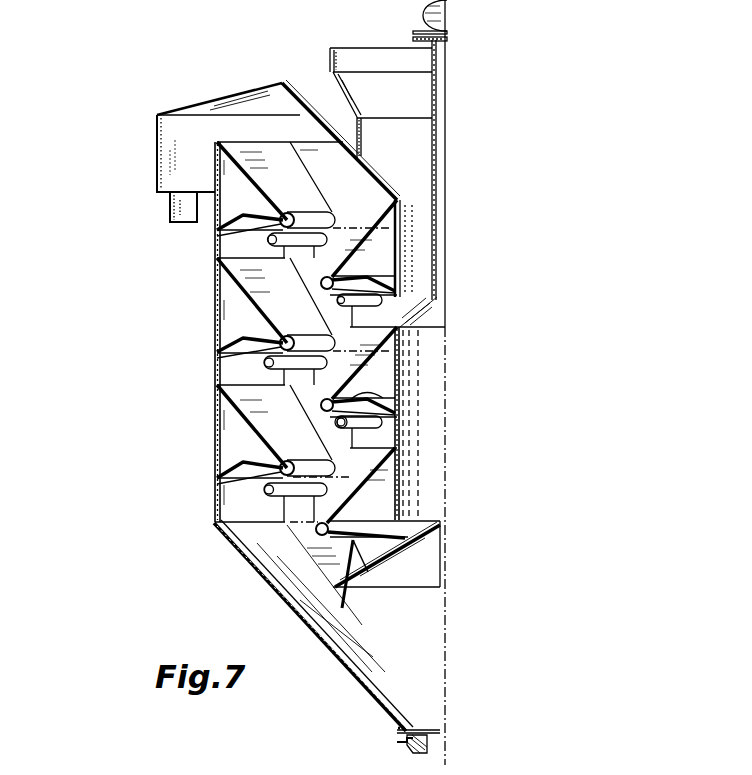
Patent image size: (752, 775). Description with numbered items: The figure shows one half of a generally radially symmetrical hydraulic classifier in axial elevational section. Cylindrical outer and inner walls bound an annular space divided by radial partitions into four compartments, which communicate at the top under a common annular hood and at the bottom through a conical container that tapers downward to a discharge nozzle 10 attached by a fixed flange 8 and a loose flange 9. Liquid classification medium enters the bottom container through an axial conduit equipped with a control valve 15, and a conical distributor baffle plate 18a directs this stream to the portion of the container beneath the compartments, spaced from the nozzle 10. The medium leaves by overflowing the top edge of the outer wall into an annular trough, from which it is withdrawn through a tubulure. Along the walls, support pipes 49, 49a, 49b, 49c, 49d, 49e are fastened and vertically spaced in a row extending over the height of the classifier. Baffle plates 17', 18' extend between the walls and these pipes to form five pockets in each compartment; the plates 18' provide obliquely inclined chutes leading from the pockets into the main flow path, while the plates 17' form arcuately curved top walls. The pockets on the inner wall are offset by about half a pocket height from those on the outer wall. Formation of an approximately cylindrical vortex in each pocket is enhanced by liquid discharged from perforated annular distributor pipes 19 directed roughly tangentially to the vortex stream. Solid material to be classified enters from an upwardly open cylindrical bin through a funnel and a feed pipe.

The fixed flange 8 is at (397, 731).
The loose flange 9 is at (400, 745).
The discharge nozzle 10 is at (433, 742).
The control valve 15 is at (427, 14).
The baffle plate 17' is at (349, 385).
The baffle plate 18' is at (327, 333).
The conical distributor baffle plate 18a is at (400, 562).
The annular distributor pipe 19 is at (317, 242).
The support pipe 49 is at (320, 530).
The support pipe 49a is at (325, 215).
The support pipe 49b is at (218, 283).
The support pipe 49c is at (283, 340).
The support pipe 49d is at (343, 428).
The support pipe 49e is at (310, 470).